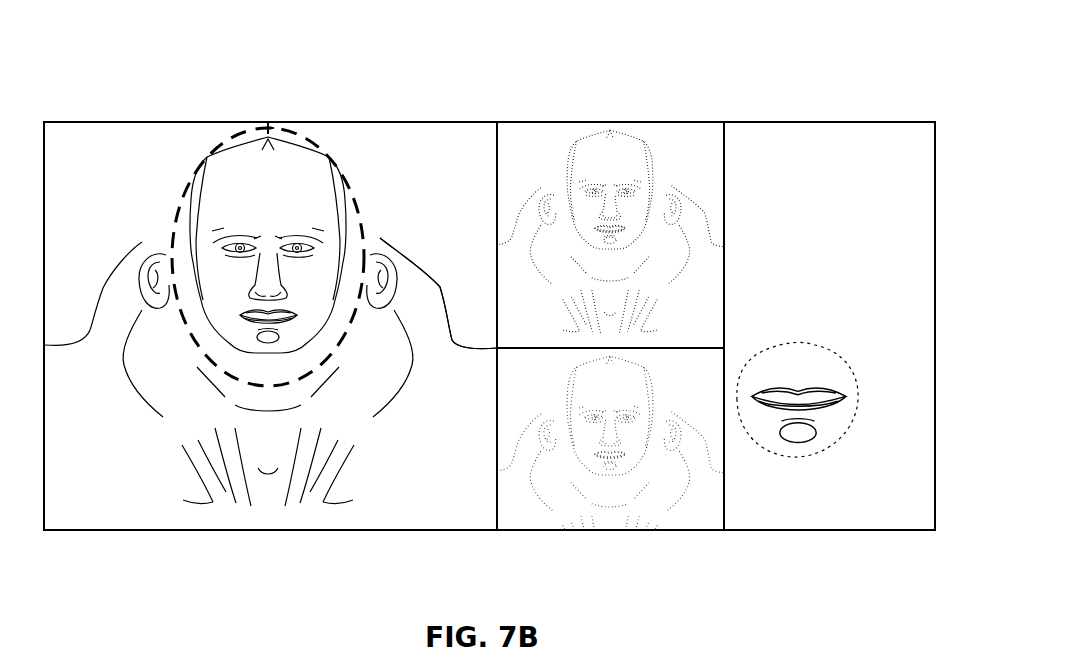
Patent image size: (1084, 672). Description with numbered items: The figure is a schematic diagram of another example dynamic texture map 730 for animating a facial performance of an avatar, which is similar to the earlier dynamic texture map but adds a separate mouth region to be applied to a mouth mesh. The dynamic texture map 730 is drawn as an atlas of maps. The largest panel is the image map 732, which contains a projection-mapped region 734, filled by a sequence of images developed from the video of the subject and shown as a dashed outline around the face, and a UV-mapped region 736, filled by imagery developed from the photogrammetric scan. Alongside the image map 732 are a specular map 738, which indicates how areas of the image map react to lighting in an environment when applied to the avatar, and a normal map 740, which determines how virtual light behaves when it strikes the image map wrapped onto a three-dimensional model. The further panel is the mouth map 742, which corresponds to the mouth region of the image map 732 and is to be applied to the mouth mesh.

The dynamic texture map 730 is at (240, 70).
The image map 732 is at (106, 160).
The projection-mapped region 734 is at (370, 227).
The UV-mapped region 736 is at (471, 220).
The specular map 738 is at (549, 161).
The normal map 740 is at (550, 380).
The mouth map 742 is at (787, 160).